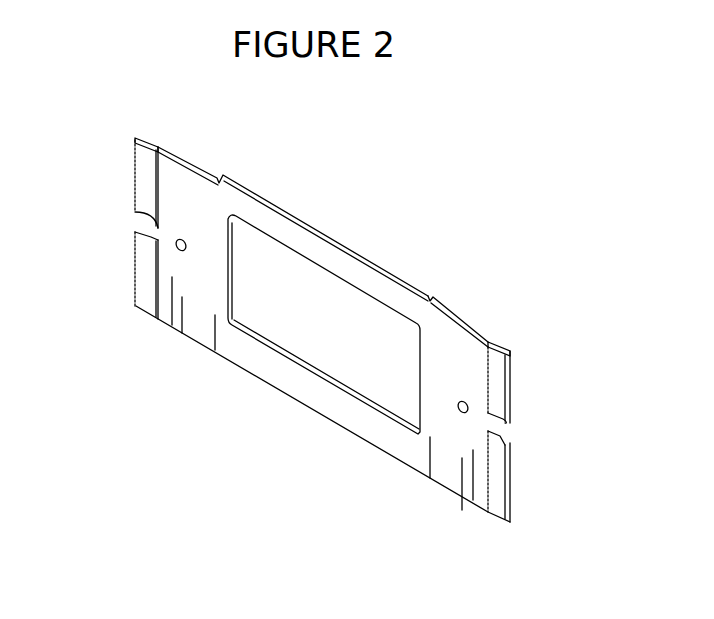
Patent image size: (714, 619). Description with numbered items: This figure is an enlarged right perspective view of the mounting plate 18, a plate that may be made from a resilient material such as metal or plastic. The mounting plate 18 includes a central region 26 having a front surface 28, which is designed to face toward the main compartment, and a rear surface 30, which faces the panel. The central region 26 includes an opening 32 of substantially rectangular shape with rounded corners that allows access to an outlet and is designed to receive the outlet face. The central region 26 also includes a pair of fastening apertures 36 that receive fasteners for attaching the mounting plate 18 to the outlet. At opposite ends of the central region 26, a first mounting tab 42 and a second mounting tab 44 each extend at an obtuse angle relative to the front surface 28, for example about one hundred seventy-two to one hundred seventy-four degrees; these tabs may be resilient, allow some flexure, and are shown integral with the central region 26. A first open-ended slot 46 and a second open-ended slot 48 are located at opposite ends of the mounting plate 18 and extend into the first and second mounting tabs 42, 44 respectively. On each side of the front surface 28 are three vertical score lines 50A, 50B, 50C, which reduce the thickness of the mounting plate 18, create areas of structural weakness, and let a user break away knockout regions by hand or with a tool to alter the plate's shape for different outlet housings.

The mounting plate 18 is at (510, 213).
The central region 26 is at (305, 218).
The front surface 28 is at (352, 418).
The rear surface 30 is at (483, 328).
The opening 32 is at (288, 380).
The fastening apertures 36 is at (180, 251).
The first mounting tab 42 is at (142, 180).
The second mounting tab 44 is at (505, 385).
The first open-ended slot 46 is at (127, 215).
The second open-ended slot 48 is at (500, 430).
The vertical score line 50A is at (172, 325).
The vertical score line 50B is at (182, 333).
The vertical score line 50C is at (215, 350).